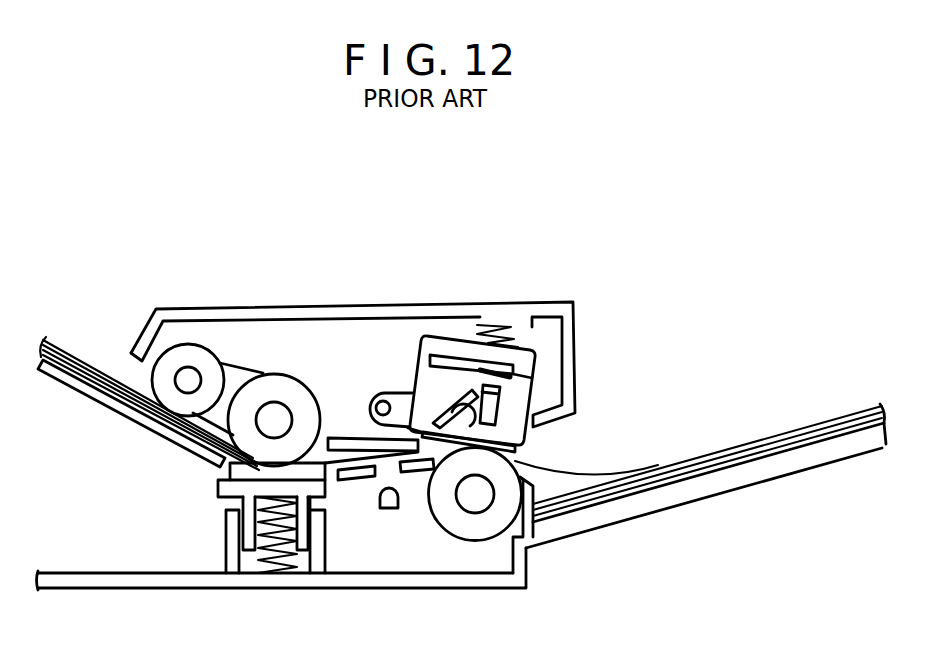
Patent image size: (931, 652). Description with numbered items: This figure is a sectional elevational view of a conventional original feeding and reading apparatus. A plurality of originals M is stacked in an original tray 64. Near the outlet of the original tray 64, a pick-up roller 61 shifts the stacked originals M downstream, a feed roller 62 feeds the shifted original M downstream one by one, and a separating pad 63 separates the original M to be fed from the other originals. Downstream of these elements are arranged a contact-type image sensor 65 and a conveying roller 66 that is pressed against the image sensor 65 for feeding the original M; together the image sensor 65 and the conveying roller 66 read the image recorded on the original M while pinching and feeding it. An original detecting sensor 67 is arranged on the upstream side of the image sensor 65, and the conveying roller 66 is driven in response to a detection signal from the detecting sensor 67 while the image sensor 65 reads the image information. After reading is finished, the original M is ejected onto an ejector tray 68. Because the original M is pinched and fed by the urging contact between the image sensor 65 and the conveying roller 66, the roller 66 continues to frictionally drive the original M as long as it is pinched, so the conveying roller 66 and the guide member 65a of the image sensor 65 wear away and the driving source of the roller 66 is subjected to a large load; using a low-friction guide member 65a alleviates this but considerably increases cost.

The original M is at (75, 358).
The pick-up roller 61 is at (202, 345).
The feed roller 62 is at (292, 373).
The separating pad 63 is at (220, 480).
The original tray 64 is at (120, 403).
The image sensor 65 is at (440, 383).
The guide member 65a is at (432, 433).
The conveying roller 66 is at (483, 528).
The original detecting sensor 67 is at (390, 510).
The ejector tray 68 is at (700, 497).